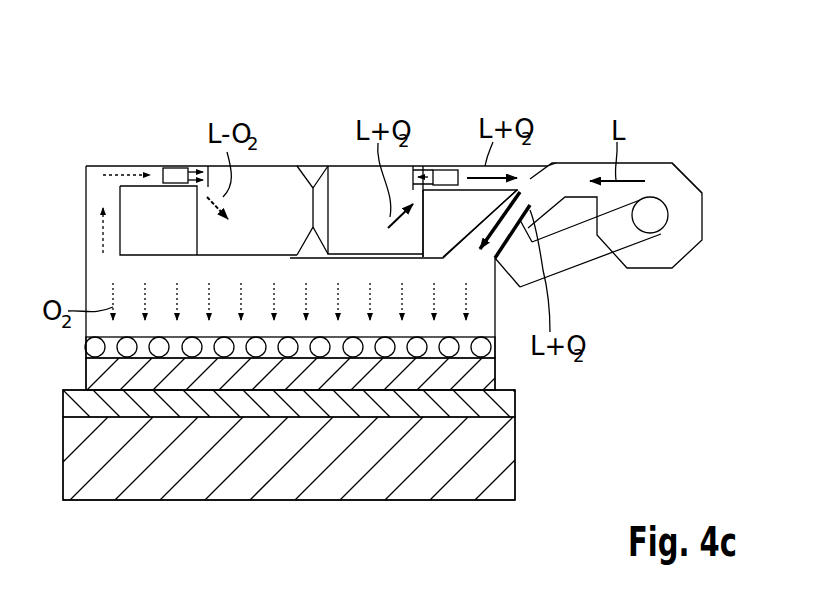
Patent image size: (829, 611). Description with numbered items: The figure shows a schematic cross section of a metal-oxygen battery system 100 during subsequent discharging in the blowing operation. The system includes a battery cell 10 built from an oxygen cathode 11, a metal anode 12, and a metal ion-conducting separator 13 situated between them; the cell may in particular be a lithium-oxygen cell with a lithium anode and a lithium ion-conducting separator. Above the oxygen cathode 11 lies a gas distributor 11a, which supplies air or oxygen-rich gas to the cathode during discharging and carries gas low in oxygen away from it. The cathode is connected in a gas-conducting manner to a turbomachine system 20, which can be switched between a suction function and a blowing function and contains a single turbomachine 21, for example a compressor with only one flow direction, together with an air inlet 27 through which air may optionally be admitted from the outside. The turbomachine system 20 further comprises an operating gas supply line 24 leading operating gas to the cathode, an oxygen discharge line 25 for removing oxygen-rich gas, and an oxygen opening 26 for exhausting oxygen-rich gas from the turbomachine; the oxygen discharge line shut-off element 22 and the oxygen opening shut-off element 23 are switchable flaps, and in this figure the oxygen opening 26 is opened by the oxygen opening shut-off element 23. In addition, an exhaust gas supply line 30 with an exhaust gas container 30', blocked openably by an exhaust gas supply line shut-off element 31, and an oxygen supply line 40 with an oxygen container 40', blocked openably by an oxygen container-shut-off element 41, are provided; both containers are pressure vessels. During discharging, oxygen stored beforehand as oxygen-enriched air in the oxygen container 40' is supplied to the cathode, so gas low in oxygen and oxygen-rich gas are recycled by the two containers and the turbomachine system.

The battery cell 10 is at (622, 354).
The oxygen cathode 11 is at (92, 377).
The gas distributor 11a is at (90, 347).
The metal anode 12 is at (72, 453).
The metal ion-conducting separator 13 is at (72, 403).
The turbomachine system 20 is at (659, 154).
The turbomachine 21 is at (655, 270).
The oxygen discharge line shut-off element 22 is at (503, 258).
The oxygen opening shut-off element 23 is at (504, 203).
The operating gas supply line 24 is at (483, 227).
The oxygen discharge line 25 is at (575, 262).
The oxygen opening 26 is at (537, 165).
The air inlet 27 is at (692, 173).
The exhaust gas supply line 30 is at (191, 221).
The exhaust gas container 30' is at (295, 185).
The exhaust gas supply line shut-off element 31 is at (177, 167).
The oxygen supply line 40 is at (401, 159).
The oxygen container 40' is at (331, 185).
The oxygen container-shut-off element 41 is at (447, 170).
The metal-oxygen battery system 100 is at (342, 108).